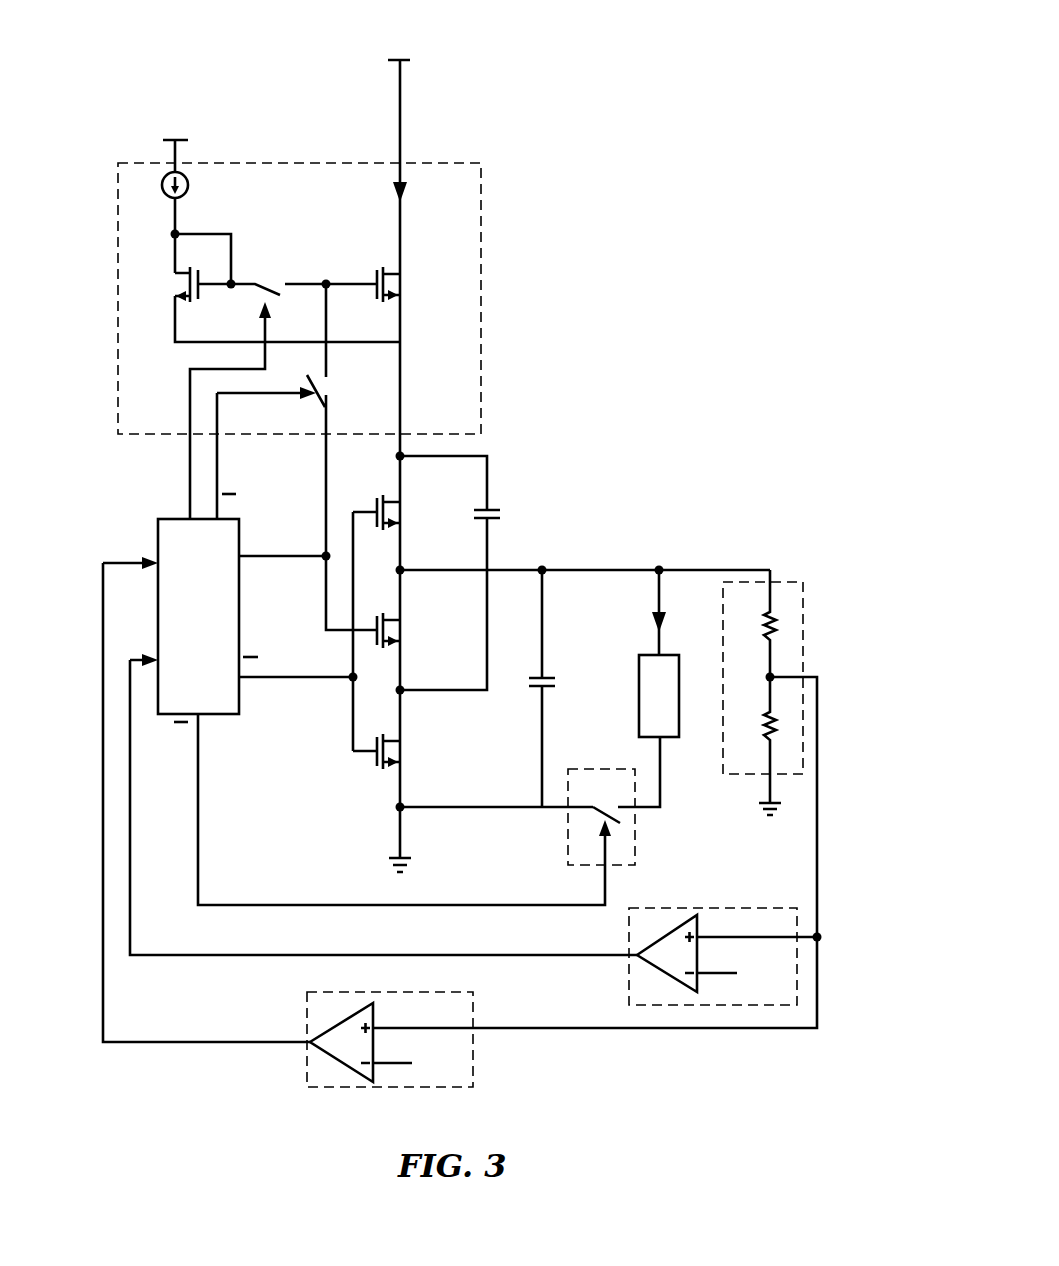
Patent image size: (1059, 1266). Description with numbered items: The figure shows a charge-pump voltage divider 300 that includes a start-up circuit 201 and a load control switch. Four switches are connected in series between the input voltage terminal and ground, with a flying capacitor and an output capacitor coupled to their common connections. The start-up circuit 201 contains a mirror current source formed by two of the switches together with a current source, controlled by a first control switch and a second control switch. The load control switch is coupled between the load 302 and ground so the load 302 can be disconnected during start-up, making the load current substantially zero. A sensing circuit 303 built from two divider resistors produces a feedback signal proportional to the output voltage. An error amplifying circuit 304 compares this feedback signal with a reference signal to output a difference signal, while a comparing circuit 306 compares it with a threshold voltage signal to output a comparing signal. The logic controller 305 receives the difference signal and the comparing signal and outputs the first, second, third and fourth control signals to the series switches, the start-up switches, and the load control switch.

The charge-pump voltage divider 300 is at (720, 73).
The start-up circuit 201 is at (116, 327).
The logic controller 305 is at (243, 702).
The load 302 is at (679, 710).
The sensing circuit 303 is at (808, 592).
The error amplifying circuit 304 is at (618, 979).
The comparing circuit 306 is at (303, 1072).